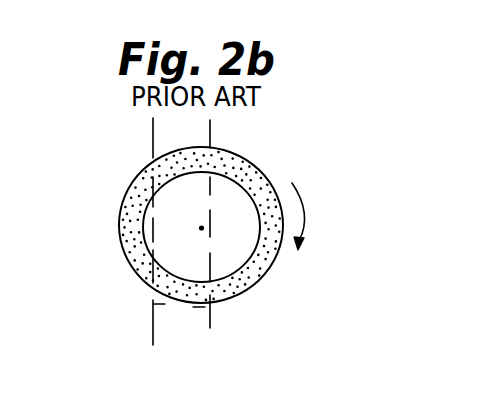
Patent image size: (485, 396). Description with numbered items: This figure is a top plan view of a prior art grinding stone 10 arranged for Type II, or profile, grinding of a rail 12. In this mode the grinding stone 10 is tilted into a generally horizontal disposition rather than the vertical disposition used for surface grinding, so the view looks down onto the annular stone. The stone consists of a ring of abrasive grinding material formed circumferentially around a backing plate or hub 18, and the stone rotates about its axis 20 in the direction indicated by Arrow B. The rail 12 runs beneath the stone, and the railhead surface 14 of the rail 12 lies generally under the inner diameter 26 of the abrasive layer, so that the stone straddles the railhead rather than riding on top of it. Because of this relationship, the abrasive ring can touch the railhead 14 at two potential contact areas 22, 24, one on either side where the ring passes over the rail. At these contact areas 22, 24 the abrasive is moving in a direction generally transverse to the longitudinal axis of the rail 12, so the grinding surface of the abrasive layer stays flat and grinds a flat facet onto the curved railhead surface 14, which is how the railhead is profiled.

The grinding stone 10 is at (138, 142).
The contact area 22 is at (172, 161).
The backing plate or hub 18 is at (238, 257).
The inner diameter 26 is at (171, 180).
The axis 20 is at (200, 228).
The rail 12 is at (138, 317).
The railhead surface 14 is at (152, 305).
The contact area 24 is at (192, 303).
The Arrow B is at (297, 190).